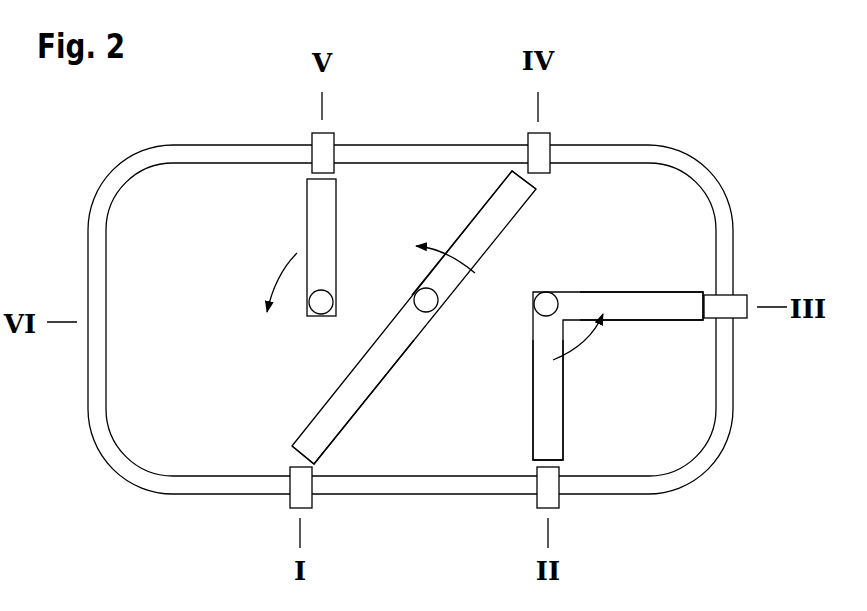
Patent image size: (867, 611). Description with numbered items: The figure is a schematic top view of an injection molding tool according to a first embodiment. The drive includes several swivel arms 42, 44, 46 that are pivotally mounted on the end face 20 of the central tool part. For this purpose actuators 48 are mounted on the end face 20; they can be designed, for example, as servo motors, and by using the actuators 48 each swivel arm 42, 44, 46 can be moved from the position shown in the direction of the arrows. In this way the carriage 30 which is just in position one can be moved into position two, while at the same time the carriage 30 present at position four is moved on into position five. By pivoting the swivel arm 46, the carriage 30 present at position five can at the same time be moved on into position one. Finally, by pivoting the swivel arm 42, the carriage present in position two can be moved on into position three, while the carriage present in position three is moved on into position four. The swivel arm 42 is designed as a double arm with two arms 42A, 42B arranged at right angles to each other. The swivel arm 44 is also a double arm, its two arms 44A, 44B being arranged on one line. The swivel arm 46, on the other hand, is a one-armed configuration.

The end face 20 is at (662, 196).
The carriage 30 is at (326, 140).
The swivel arm 42 is at (595, 348).
The arm 42A is at (553, 442).
The arm 42B is at (658, 303).
The swivel arm 44 is at (440, 344).
The arm 44A is at (357, 393).
The arm 44B is at (507, 206).
The swivel arm 46 is at (364, 228).
The actuator 48 is at (322, 302).